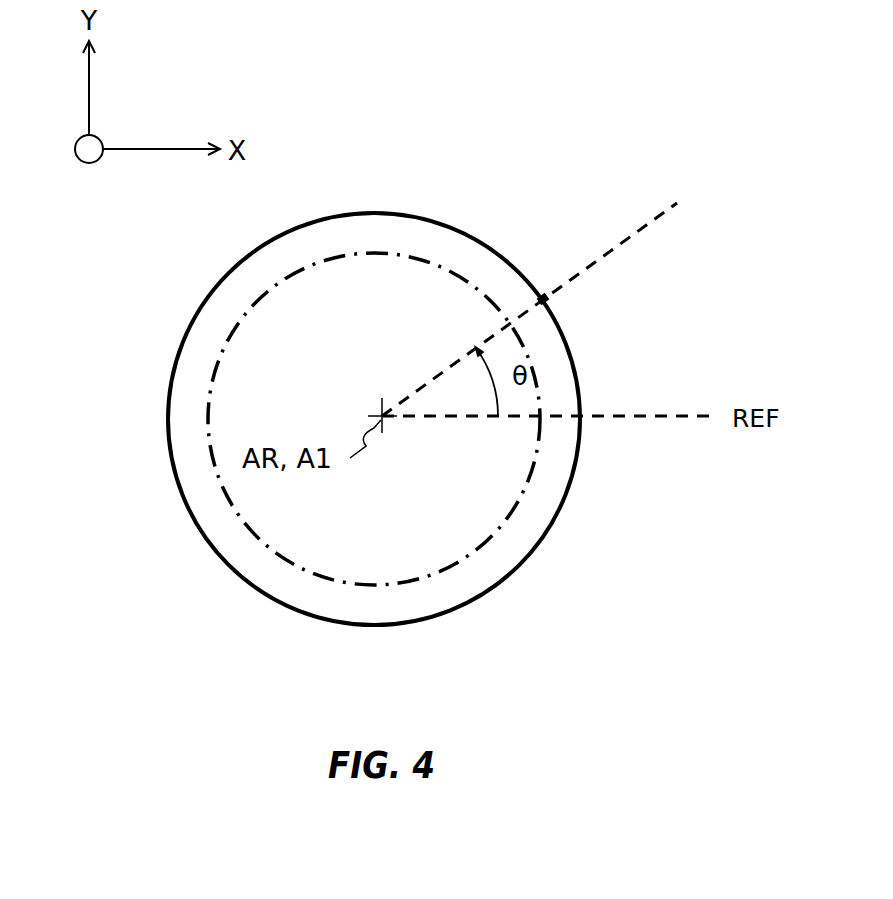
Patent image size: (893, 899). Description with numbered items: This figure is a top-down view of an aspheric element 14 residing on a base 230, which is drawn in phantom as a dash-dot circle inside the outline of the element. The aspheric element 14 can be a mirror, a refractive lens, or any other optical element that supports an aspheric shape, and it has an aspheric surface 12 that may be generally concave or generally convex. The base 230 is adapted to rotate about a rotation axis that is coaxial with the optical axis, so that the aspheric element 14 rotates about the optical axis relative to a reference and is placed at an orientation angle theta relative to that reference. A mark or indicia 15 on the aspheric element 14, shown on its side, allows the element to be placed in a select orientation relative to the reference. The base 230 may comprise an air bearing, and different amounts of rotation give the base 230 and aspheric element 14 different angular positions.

The aspheric surface 12 is at (430, 244).
The aspheric element 14 is at (301, 389).
The mark or indicia 15 is at (558, 298).
The base 230 is at (490, 532).